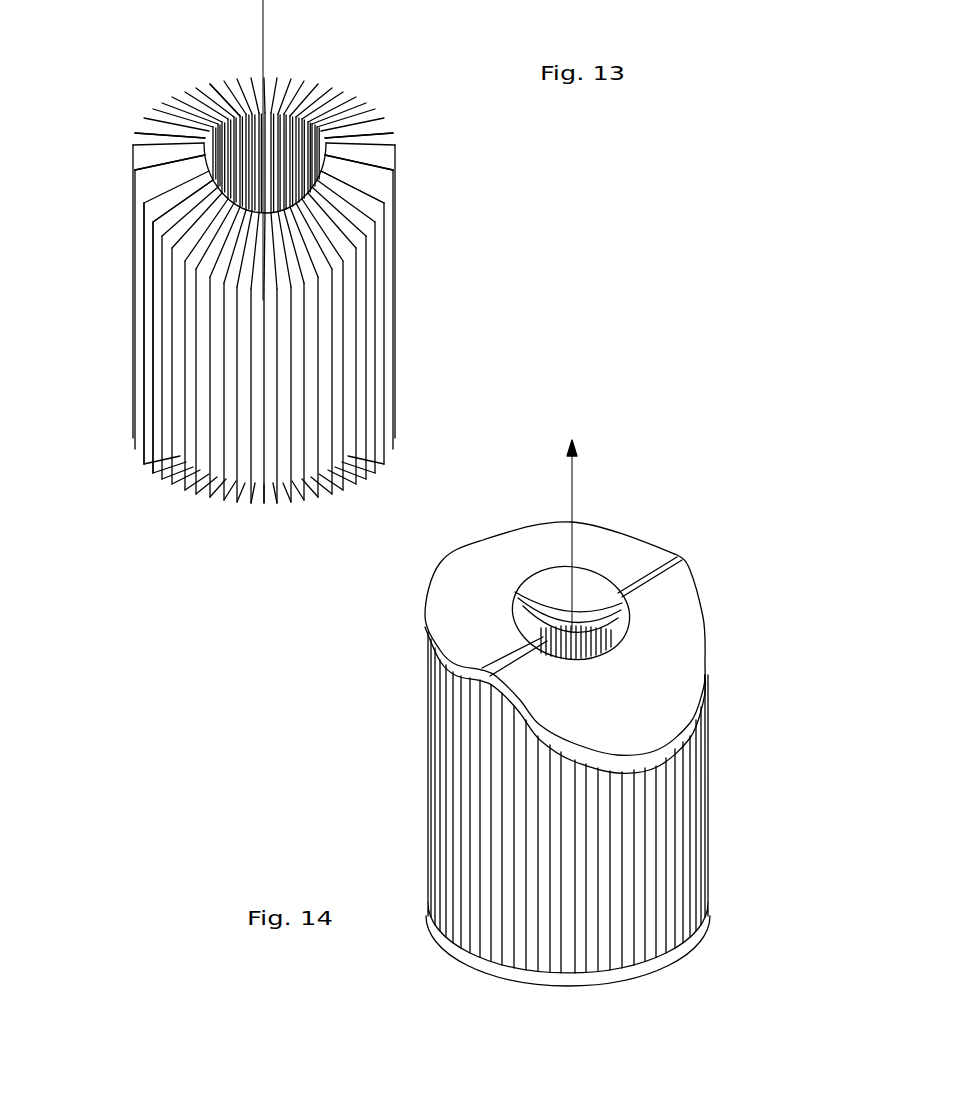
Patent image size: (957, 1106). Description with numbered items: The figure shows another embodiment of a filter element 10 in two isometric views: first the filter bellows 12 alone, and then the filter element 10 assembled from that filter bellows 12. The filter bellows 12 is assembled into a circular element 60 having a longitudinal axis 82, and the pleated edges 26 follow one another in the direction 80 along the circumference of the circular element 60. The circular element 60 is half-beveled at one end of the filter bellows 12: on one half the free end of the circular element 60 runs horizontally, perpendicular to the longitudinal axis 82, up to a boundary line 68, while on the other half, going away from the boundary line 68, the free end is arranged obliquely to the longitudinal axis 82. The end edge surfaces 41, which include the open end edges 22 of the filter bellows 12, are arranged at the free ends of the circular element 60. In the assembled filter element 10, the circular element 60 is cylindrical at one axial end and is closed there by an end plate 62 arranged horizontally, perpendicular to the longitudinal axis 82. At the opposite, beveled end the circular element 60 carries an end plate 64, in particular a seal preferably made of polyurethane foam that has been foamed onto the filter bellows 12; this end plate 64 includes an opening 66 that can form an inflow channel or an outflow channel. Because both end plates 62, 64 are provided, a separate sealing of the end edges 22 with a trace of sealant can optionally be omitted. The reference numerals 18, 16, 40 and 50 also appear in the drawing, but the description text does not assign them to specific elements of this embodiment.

In FIG. 13, the filter bellows 12 is at (285, 259).
In FIG. 13, the circular element 60 is at (356, 72).
In FIG. 14, the circular element 60 is at (586, 772).
In FIG. 14, the filter element 10 is at (586, 772).
In FIG. 13, the longitudinal axis 82 is at (247, 150).
In FIG. 14, the longitudinal axis 82 is at (587, 535).
In FIG. 13, the central opening 18 is at (240, 138).
In FIG. 13, the opening 66 is at (195, 135).
In FIG. 14, the opening 66 is at (511, 617).
In FIG. 13, the boundary line 68 is at (137, 152).
In FIG. 14, the boundary line 68 is at (486, 660).
In FIG. 13, the pleated edges 26 is at (160, 210).
In FIG. 13, the fins 16 is at (145, 338).
In FIG. 14, the fins 16 is at (453, 750).
In FIG. 13, the end edge surfaces 41 is at (373, 168).
In FIG. 13, the top surface 40 is at (360, 220).
In FIG. 14, the top surface 40 is at (630, 713).
In FIG. 13, the end edges 22 is at (205, 75).
In FIG. 14, the end edges 22 is at (605, 794).
In FIG. 13, the direction 80 is at (322, 404).
In FIG. 14, the direction 80 is at (627, 869).
In FIG. 14, the cover plate 50 is at (607, 639).
In FIG. 14, the end plate 64 is at (697, 627).
In FIG. 14, the end plate 62 is at (697, 930).